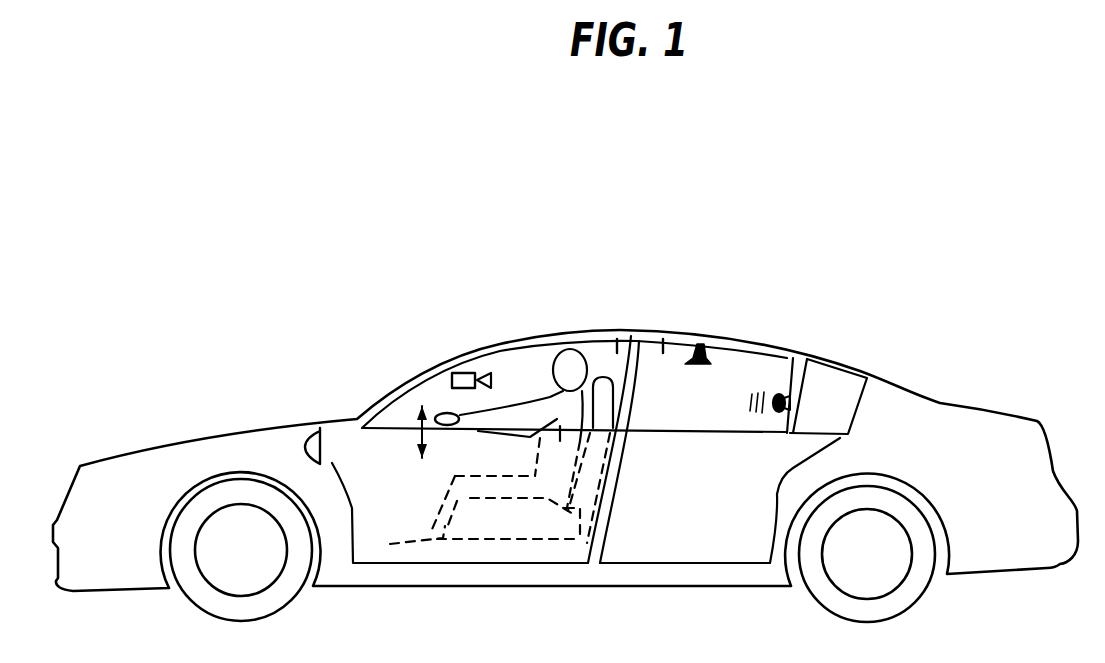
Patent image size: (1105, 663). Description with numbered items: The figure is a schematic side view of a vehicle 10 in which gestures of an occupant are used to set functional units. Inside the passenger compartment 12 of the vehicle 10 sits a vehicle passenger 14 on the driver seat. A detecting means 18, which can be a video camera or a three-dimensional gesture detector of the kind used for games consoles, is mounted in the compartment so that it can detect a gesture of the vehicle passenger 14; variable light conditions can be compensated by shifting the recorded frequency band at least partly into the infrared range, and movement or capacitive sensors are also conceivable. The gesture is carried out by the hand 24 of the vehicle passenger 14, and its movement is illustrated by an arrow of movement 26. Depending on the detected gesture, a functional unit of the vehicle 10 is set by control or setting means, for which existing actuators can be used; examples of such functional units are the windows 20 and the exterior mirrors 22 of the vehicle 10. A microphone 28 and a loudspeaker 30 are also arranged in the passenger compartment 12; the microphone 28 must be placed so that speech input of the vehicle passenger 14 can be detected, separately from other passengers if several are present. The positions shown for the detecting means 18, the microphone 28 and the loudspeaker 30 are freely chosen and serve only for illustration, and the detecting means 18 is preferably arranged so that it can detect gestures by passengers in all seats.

The vehicle 10 is at (380, 255).
The passenger compartment 12 is at (537, 360).
The vehicle passenger 14 is at (500, 485).
The detecting means 18 is at (462, 372).
The windows 20 is at (662, 330).
The exterior mirrors 22 is at (318, 431).
The hand 24 is at (437, 402).
The arrow of movement 26 is at (422, 447).
The microphone 28 is at (700, 347).
The loudspeaker 30 is at (787, 400).